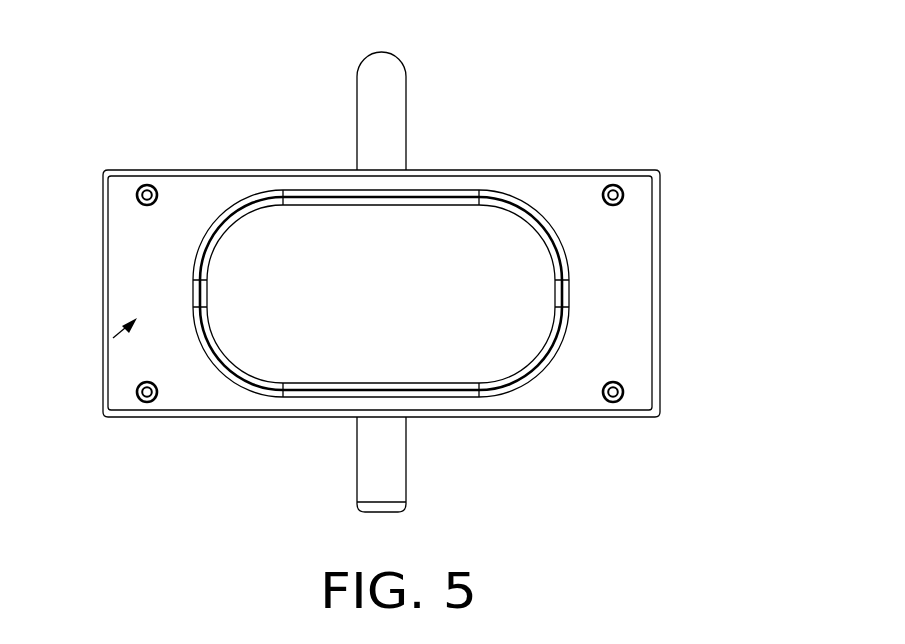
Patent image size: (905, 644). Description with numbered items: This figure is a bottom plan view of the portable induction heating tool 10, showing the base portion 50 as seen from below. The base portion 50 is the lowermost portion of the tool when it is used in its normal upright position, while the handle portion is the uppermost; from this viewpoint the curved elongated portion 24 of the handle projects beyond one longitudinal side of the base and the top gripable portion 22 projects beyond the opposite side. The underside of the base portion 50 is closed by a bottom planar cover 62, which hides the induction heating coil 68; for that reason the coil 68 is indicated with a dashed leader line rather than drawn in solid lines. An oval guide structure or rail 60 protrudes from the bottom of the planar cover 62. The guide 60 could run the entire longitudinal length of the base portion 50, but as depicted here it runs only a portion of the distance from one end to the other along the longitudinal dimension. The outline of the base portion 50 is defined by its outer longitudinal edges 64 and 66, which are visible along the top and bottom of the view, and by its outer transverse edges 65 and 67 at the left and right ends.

The induction heating tool 10 is at (390, 272).
The top gripable portion 22 is at (383, 488).
The curved elongated portion 24 is at (398, 56).
The base portion 50 is at (390, 276).
The oval guide structure 60 is at (560, 243).
The bottom planar cover 62 is at (385, 284).
The outer longitudinal edge 64 is at (212, 170).
The outer transverse edge 65 is at (103, 235).
The outer longitudinal edge 66 is at (160, 419).
The outer transverse edge 67 is at (660, 317).
The induction heating coil 68 is at (122, 332).